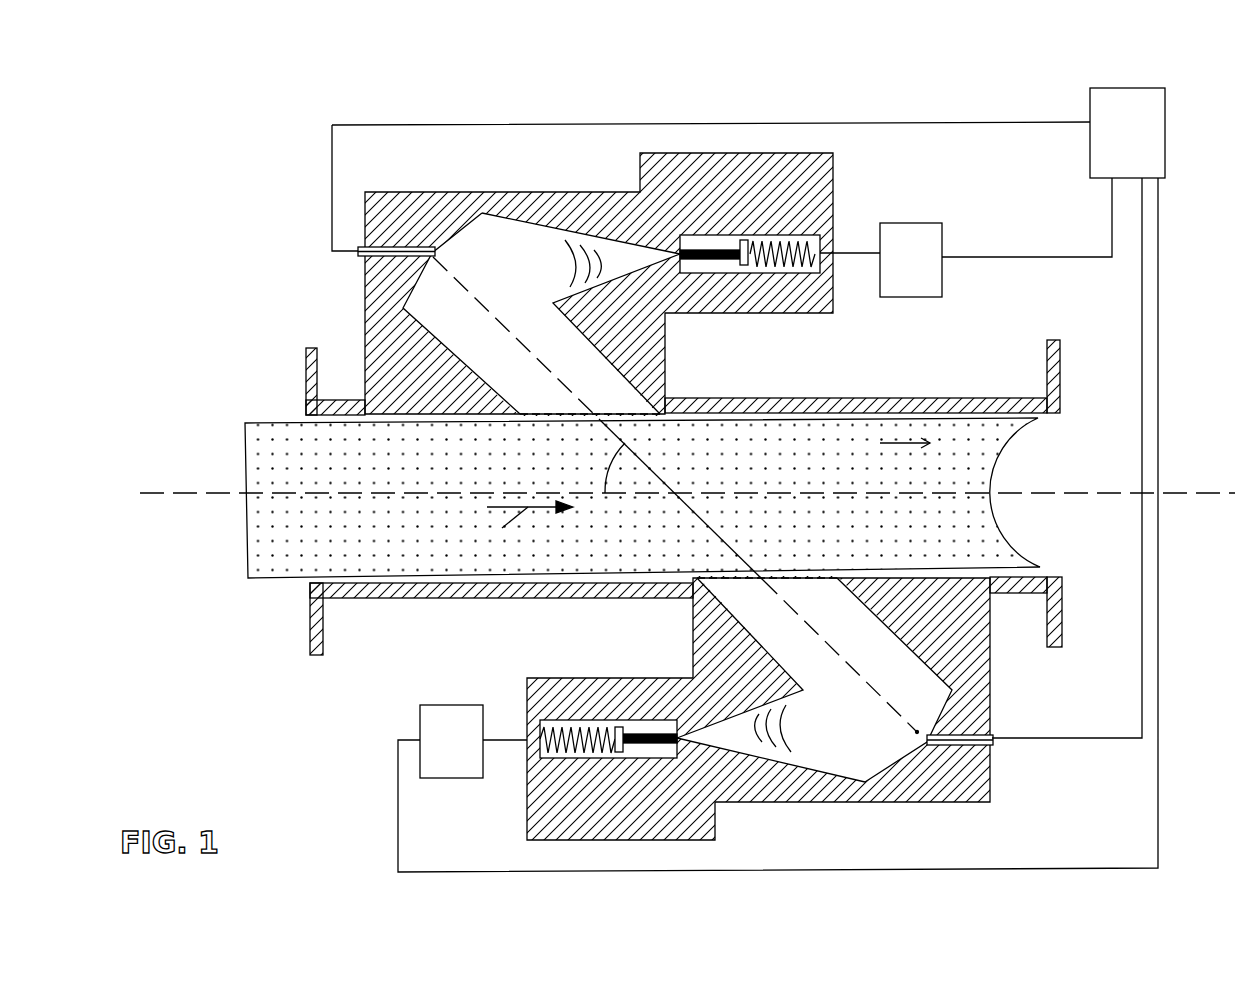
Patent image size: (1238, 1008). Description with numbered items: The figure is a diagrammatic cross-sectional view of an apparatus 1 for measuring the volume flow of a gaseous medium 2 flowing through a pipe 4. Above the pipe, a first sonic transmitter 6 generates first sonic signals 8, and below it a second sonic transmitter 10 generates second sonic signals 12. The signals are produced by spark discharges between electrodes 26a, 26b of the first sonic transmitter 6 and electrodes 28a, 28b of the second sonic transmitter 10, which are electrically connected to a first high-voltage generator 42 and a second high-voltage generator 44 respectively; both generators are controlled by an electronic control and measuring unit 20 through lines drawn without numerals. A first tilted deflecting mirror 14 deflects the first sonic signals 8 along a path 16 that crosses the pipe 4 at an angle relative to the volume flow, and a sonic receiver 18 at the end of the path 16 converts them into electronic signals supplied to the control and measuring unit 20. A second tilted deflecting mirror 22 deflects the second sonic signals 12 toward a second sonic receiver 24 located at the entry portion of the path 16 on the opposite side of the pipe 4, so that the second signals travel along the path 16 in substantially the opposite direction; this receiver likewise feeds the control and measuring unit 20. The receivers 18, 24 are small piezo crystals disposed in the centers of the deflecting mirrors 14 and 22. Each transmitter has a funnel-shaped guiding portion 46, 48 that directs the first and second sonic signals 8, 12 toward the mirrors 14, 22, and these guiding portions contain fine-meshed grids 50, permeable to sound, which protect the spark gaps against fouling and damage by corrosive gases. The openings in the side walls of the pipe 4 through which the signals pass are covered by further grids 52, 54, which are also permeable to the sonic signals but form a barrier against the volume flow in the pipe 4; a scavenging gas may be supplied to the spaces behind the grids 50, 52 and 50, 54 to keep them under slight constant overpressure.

The apparatus 1 is at (256, 235).
The gaseous medium 2 is at (853, 527).
The pipe 4 is at (877, 403).
The first sonic transmitter 6 is at (733, 226).
The first sonic signals 8 is at (577, 248).
The second sonic transmitter 10 is at (621, 770).
The second sonic signals 12 is at (793, 752).
The first deflecting mirror 14 is at (460, 227).
The path 16 is at (662, 478).
The sonic receiver 18 is at (936, 769).
The electronic control and measuring unit 20 is at (1112, 130).
The second deflecting mirror 22 is at (887, 770).
The second sonic receiver 24 is at (421, 229).
The electrode of the first sonic transmitter 26a is at (683, 253).
The electrode of the first sonic transmitter 26b is at (683, 253).
The electrode of the second sonic transmitter 28a is at (643, 745).
The electrode of the second sonic transmitter 28b is at (643, 745).
The first high-voltage generator 42 is at (912, 253).
The second high-voltage generator 44 is at (448, 750).
The funnel-shaped guiding portion 46 is at (535, 227).
The funnel-shaped guiding portion 48 is at (837, 777).
The fine-meshed grid 50 is at (620, 253).
The grid 52 is at (652, 393).
The grid 54 is at (697, 597).